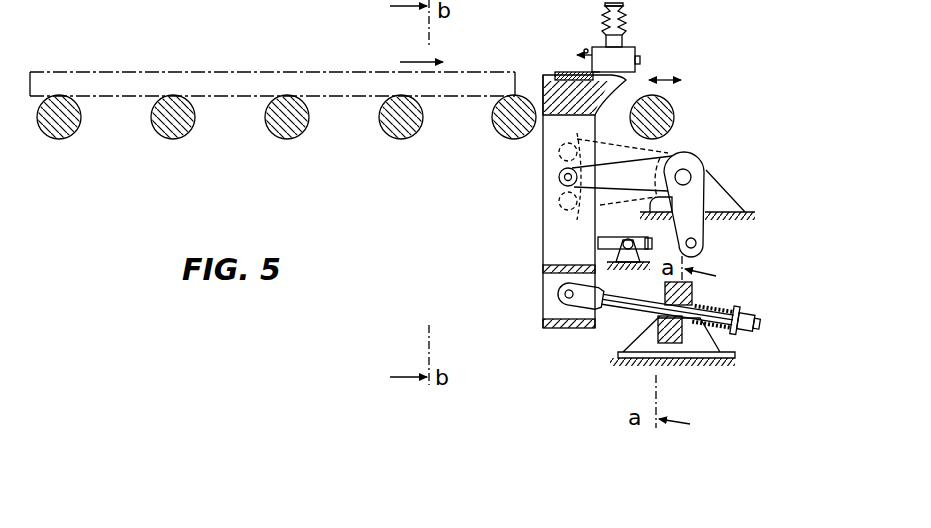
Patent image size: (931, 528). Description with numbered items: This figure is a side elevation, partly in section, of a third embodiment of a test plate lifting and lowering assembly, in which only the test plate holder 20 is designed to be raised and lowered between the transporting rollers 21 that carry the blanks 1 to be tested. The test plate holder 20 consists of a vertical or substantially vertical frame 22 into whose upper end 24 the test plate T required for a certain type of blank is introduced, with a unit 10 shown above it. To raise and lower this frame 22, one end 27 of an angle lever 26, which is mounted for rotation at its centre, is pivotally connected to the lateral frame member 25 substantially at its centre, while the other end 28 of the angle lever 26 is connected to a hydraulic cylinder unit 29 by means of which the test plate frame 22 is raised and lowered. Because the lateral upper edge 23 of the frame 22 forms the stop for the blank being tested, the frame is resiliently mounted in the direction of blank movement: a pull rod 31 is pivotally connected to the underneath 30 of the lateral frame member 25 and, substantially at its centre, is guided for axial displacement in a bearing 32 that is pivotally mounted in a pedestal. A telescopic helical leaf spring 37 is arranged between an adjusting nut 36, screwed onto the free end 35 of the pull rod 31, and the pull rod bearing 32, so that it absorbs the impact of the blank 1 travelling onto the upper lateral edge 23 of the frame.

The blank 1 is at (235, 84).
The transporting rollers 21 is at (160, 125).
The tool head 10 is at (626, 57).
The test plate T is at (572, 72).
The test plate holder 20 is at (540, 251).
The frame 22 is at (540, 154).
The lateral upper edge 23 is at (540, 84).
The upper end 24 is at (553, 73).
The lateral frame member 25 is at (550, 226).
The angle lever 26 is at (640, 165).
The one end of angle lever 27 is at (559, 181).
The other end of angle lever 28 is at (704, 246).
The hydraulic cylinder unit 29 is at (606, 238).
The underneath of lateral frame member 30 is at (543, 309).
The pull rod 31 is at (618, 305).
The bearing 32 is at (668, 338).
The free end of pull rod 35 is at (722, 328).
The adjusting nut 36 is at (748, 320).
The telescopic helical leaf spring 37 is at (718, 305).